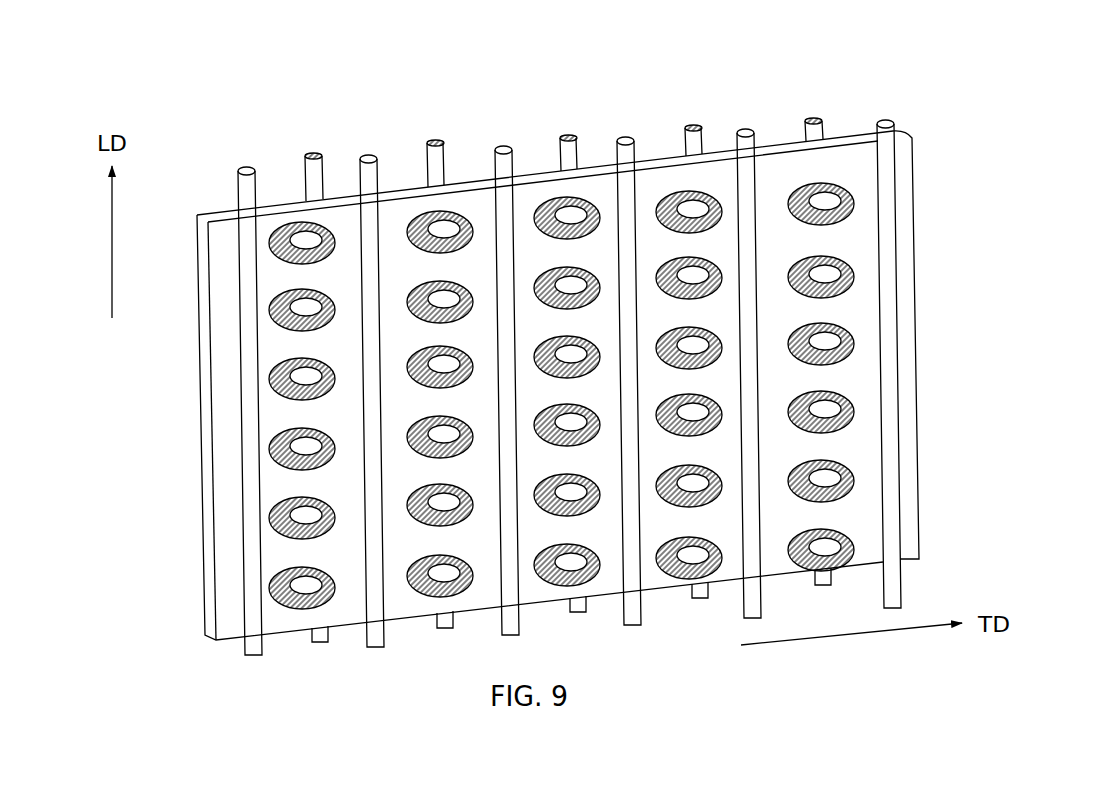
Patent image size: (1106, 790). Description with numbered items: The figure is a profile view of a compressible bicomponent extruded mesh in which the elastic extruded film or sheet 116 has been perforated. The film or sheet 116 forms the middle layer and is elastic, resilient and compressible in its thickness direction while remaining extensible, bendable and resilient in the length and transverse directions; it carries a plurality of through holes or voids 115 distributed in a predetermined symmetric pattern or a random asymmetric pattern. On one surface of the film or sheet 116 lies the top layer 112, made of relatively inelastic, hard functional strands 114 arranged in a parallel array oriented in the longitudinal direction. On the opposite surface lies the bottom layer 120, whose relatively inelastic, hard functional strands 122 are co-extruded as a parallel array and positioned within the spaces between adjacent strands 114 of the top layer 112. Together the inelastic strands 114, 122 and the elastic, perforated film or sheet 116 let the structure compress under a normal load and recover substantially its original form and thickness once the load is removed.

The top layer 112 is at (896, 232).
The functional strands 114 is at (243, 366).
The through holes 115 is at (854, 413).
The elastic extruded film or sheet 116 is at (846, 308).
The bottom layer 120 is at (425, 146).
The functional strands 122 is at (820, 112).